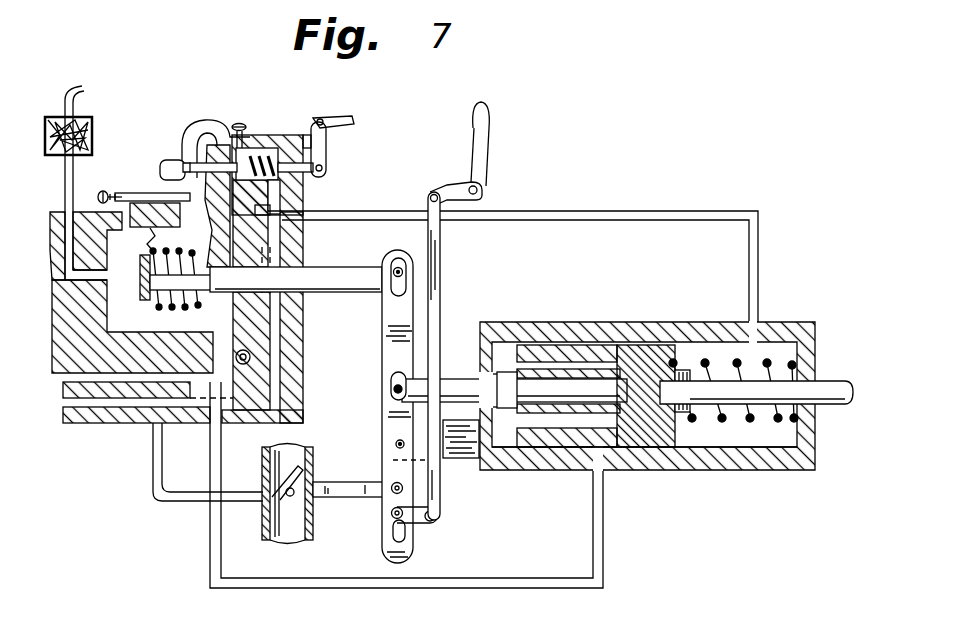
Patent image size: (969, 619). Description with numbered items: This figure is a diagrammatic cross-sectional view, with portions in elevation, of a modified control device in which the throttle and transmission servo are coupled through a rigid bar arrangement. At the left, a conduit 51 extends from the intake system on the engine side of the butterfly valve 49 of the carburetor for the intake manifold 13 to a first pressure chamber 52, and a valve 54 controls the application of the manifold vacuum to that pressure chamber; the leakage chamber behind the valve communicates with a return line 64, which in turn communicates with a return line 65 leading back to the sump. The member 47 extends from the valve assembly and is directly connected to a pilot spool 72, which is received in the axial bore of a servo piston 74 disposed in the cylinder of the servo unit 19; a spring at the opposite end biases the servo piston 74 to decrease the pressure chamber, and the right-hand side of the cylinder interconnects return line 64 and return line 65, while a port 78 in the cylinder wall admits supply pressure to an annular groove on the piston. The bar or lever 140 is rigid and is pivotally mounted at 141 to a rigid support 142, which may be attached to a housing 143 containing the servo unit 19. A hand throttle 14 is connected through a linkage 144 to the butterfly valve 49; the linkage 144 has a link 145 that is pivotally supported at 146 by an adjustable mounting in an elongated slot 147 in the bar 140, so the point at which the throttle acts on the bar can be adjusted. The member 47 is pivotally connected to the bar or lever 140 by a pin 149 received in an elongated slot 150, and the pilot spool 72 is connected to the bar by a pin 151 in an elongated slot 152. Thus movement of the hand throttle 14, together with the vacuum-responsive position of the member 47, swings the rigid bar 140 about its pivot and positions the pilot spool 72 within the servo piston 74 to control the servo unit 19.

The intake manifold 13 is at (317, 518).
The hand throttle 14 is at (484, 145).
The servo unit 19 is at (666, 410).
The member 47 is at (328, 280).
The butterfly valve 49 is at (315, 472).
The conduit 51 is at (165, 162).
The first pressure chamber 52 is at (182, 506).
The valve 54 is at (261, 122).
The return line 64 is at (283, 196).
The return line 65 is at (570, 219).
The pilot spool 72 is at (460, 385).
The servo piston 74 is at (643, 347).
The port 78 is at (598, 471).
The bar or lever 140 is at (395, 357).
The pivot 141 is at (396, 444).
The rigid support 142 is at (459, 455).
The housing 143 is at (533, 457).
The linkage 144 is at (442, 275).
The link 145 is at (438, 521).
The pivot 146 is at (393, 519).
The elongated slot 147 is at (406, 538).
The pin 149 is at (399, 296).
The elongated slot 150 is at (360, 297).
The pin 151 is at (394, 395).
The elongated slot 152 is at (391, 378).